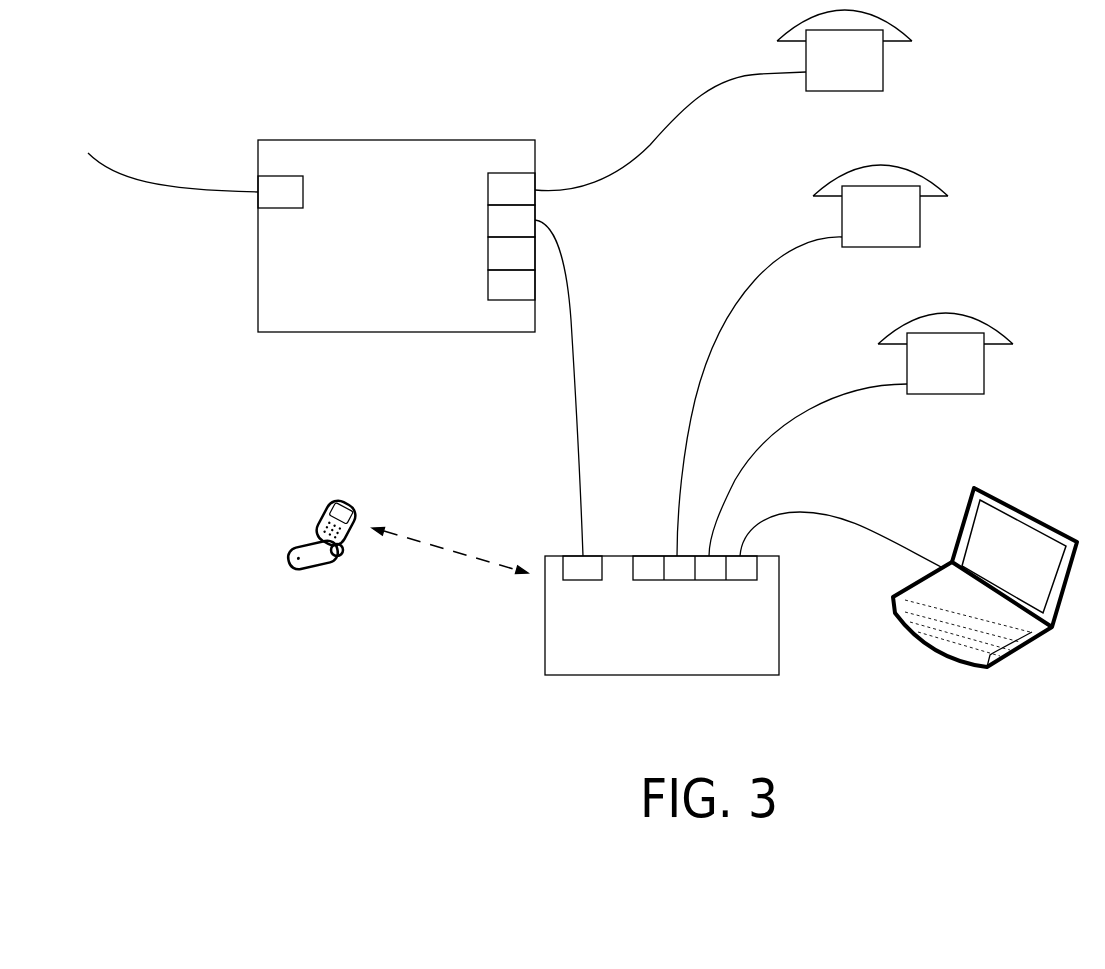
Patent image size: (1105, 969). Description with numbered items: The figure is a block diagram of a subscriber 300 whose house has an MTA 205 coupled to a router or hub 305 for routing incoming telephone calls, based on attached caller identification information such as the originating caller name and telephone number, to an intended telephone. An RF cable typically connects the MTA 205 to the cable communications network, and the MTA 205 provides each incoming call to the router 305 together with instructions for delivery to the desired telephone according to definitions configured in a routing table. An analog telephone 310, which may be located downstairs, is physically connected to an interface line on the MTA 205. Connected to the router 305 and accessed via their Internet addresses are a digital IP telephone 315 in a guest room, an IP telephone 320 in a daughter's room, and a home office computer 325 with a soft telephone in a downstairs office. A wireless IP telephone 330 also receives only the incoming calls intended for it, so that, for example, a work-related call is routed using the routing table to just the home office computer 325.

The subscriber 300 is at (359, 23).
The MTA 205 is at (448, 332).
The router or hub 305 is at (707, 675).
The analog telephone 310 is at (868, 91).
The digital Internet protocol (IP) telephone 315 is at (900, 247).
The IP telephone 320 is at (968, 394).
The home office computer 325 is at (963, 658).
The wireless IP telephone 330 is at (330, 557).